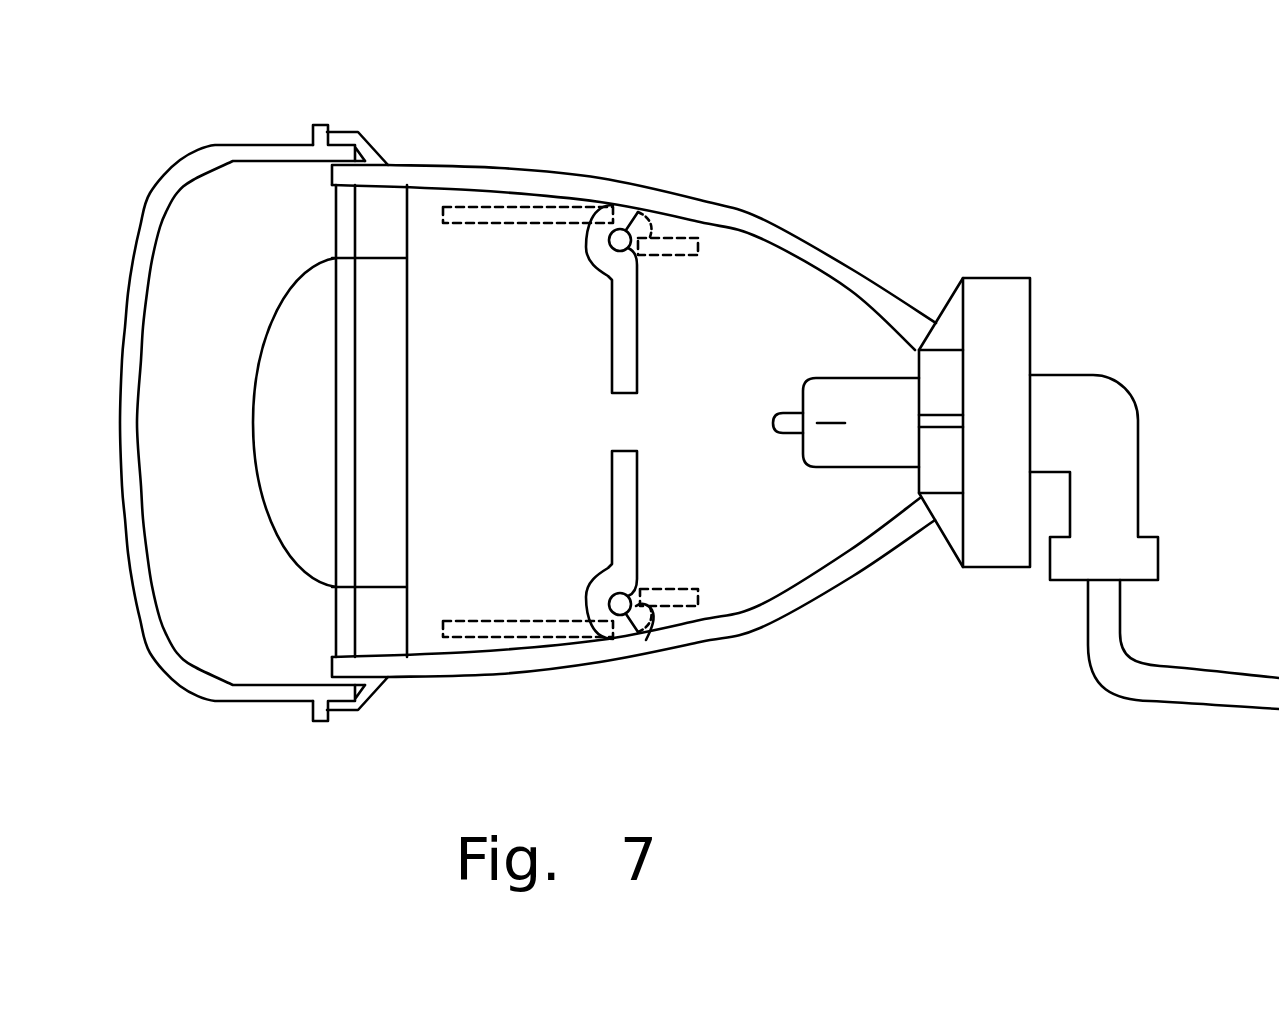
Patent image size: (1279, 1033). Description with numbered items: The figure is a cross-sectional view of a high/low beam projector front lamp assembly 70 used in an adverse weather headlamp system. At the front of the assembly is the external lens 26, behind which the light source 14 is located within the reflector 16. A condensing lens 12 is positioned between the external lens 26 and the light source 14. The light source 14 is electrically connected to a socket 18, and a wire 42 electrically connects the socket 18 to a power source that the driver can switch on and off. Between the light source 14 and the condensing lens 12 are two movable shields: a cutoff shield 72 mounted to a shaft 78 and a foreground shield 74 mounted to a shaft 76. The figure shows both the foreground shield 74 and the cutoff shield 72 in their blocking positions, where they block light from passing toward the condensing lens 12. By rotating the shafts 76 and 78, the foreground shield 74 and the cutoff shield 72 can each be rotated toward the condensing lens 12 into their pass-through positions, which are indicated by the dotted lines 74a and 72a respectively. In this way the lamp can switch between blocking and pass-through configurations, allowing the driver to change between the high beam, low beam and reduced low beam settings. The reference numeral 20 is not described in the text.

The front lamp assembly 70 is at (954, 133).
The external lens 26 is at (186, 163).
The reflector 16 is at (770, 230).
The housing wall 20 is at (487, 665).
The condensing lens 12 is at (316, 562).
The foreground shield 74 is at (635, 312).
The pass-through position of foreground shield 74a is at (546, 217).
The shaft 76 is at (650, 215).
The cutoff shield 72 is at (637, 534).
The pass-through position of cutoff shield 72a is at (550, 630).
The shaft 78 is at (646, 640).
The light source 14 is at (890, 400).
The socket 18 is at (998, 337).
The wire 42 is at (1173, 682).